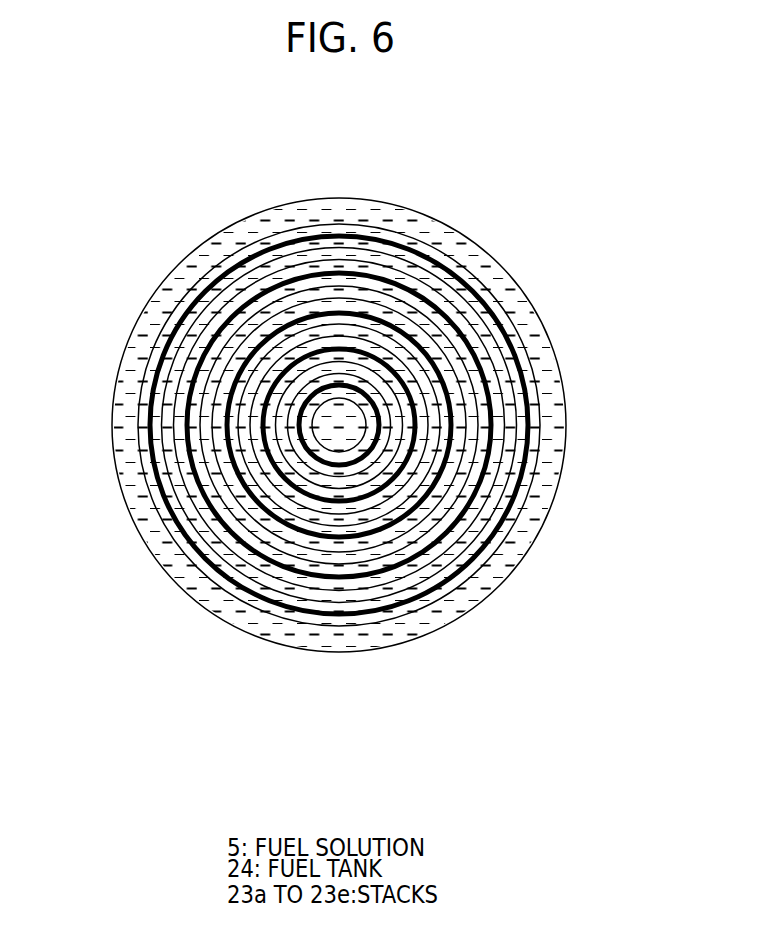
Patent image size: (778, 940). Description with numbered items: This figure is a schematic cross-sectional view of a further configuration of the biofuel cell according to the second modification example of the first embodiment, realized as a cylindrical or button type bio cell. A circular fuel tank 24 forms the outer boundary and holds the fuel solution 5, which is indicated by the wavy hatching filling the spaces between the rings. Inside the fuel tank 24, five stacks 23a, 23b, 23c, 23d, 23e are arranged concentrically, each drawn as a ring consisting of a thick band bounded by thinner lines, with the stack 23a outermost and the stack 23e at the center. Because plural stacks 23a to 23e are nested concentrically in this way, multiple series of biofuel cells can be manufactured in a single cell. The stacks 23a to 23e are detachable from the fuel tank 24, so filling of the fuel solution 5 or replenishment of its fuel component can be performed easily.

The fuel solution 5 is at (113, 442).
The fuel tank 24 is at (340, 198).
The stack 23a is at (510, 324).
The stack 23b is at (503, 408).
The stack 23c is at (412, 502).
The stack 23d is at (327, 500).
The stack 23e is at (303, 458).